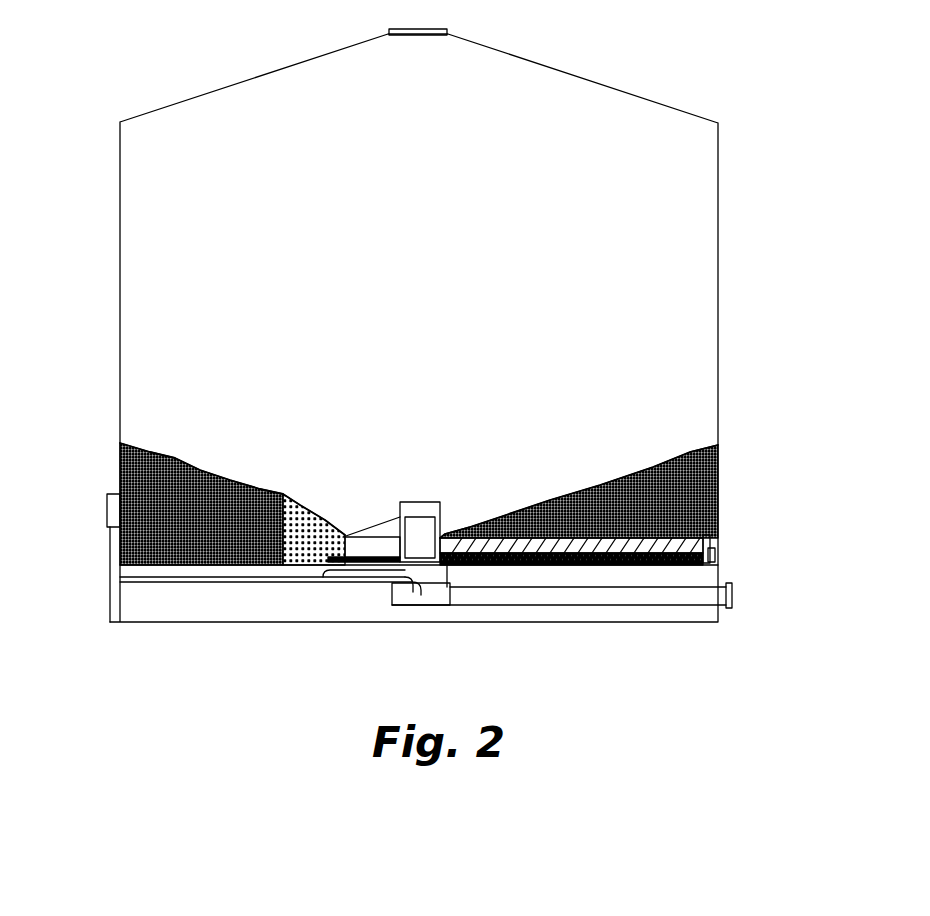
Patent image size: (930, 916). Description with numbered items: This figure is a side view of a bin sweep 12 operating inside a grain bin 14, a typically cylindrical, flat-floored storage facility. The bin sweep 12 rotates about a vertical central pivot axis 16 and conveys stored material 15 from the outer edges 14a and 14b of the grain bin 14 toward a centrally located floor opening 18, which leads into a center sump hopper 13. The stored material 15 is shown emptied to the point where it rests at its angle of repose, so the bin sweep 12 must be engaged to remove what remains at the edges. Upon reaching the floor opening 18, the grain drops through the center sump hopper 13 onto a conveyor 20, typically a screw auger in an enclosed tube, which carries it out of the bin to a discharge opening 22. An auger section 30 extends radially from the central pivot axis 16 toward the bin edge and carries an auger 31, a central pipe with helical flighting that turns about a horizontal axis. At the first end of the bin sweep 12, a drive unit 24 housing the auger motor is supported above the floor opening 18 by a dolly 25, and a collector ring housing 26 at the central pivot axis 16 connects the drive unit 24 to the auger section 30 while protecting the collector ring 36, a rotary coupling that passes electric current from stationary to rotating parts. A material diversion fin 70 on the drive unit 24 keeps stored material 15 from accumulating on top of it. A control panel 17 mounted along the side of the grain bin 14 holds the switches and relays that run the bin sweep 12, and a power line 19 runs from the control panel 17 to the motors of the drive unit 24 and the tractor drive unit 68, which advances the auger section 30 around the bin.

The bin sweep 12 is at (566, 465).
The center sump hopper 13 is at (410, 590).
The grain bin 14 is at (720, 248).
The outer edge of grain bin 14a is at (720, 446).
The outer edge of grain bin 14b is at (120, 443).
The stored material 15 is at (204, 495).
The central pivot axis 16 is at (425, 567).
The control panel 17 is at (110, 512).
The floor opening 18 is at (432, 565).
The power line 19 is at (187, 580).
The conveyor 20 is at (587, 593).
The discharge opening 22 is at (733, 595).
The drive unit 24 is at (373, 542).
The dolly 25 is at (330, 562).
The collector ring housing 26 is at (428, 502).
The auger section 30 is at (657, 535).
The auger 31 is at (663, 568).
The collector ring 36 is at (412, 527).
The tractor drive unit 68 is at (717, 555).
The material diversion fin 70 is at (385, 530).